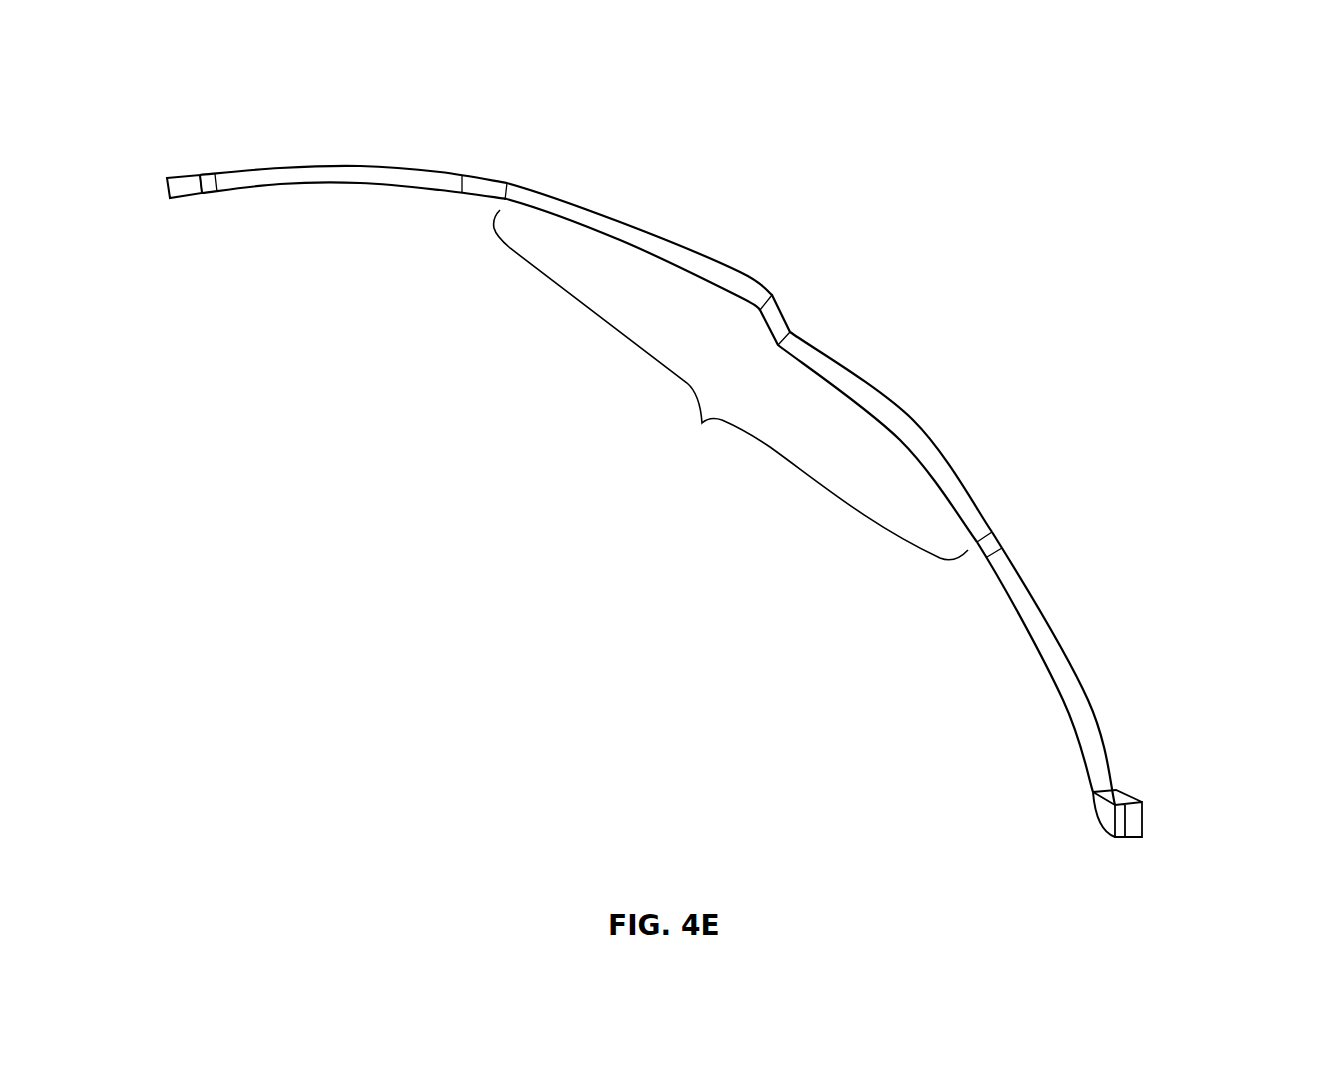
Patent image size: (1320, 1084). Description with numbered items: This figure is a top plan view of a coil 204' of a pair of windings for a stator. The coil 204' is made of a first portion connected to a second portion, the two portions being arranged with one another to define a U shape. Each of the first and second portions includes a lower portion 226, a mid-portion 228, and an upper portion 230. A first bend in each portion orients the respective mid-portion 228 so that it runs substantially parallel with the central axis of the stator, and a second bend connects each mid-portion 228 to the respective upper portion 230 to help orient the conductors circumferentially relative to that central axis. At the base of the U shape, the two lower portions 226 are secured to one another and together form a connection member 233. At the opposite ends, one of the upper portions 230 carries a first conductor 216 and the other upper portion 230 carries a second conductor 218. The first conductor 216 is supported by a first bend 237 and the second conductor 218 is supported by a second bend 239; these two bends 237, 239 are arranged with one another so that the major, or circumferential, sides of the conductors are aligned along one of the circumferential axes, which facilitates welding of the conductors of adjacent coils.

The coil 204' is at (703, 478).
The first conductor 216 is at (1143, 801).
The second conductor 218 is at (173, 203).
The lower portion 226 is at (658, 234).
The mid-portion 228 is at (508, 186).
The upper portion 230 is at (366, 166).
The connection member 233 is at (731, 385).
The first bend 237 is at (1098, 815).
The second bend 239 is at (206, 172).